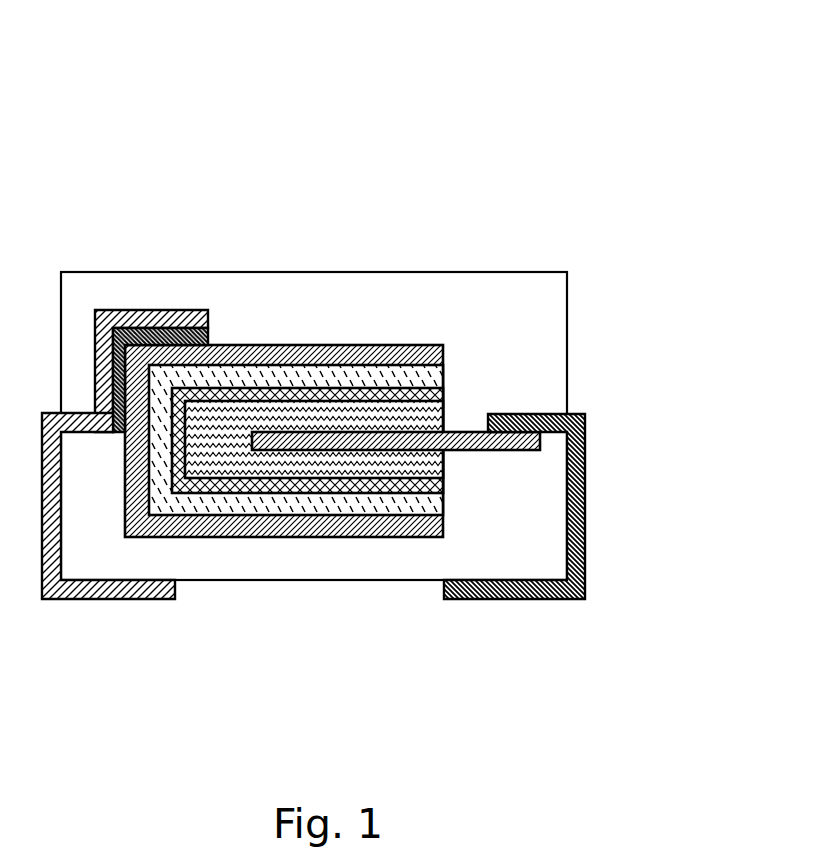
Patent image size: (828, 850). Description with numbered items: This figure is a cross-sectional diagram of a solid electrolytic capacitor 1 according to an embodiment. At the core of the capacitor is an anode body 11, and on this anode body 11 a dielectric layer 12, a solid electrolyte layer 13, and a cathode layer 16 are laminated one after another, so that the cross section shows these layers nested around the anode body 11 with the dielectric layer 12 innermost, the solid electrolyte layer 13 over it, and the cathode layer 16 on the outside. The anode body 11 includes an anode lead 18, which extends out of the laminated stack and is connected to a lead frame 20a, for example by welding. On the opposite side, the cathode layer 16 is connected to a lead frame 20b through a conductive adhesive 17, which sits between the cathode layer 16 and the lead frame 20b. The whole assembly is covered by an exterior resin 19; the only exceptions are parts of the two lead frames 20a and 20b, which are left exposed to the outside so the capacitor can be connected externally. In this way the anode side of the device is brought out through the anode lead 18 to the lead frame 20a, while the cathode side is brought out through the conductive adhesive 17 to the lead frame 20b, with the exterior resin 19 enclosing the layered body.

The solid electrolytic capacitor 1 is at (585, 88).
The anode body 11 is at (444, 467).
The dielectric layer 12 is at (444, 395).
The solid electrolyte layer 13 is at (444, 378).
The cathode layer 16 is at (444, 357).
The conductive adhesive 17 is at (210, 330).
The anode lead 18 is at (525, 443).
The exterior resin 19 is at (100, 283).
The lead frame 20a is at (513, 590).
The lead frame 20b is at (132, 588).